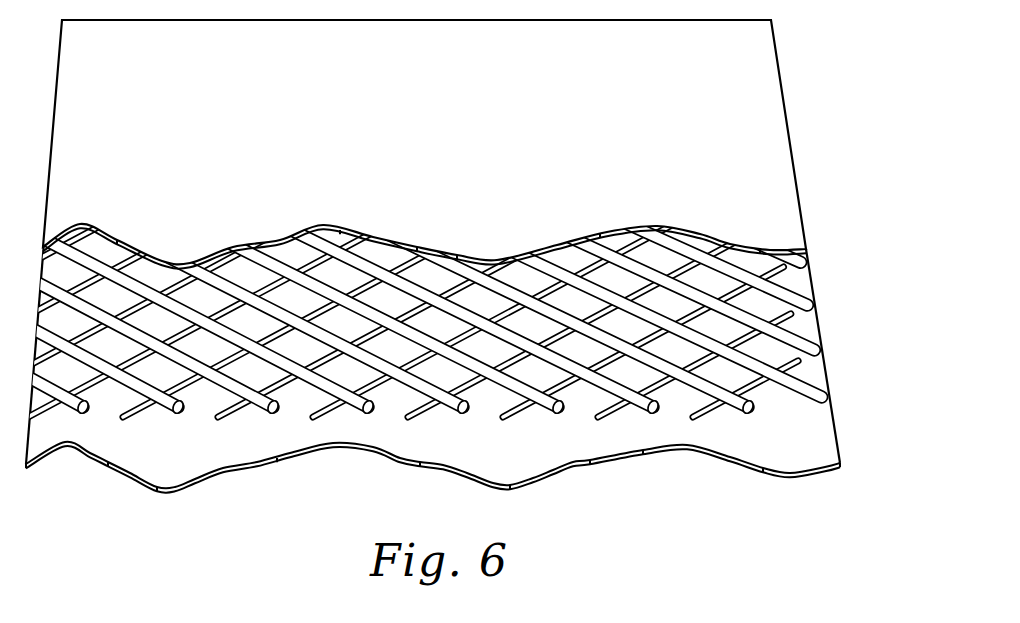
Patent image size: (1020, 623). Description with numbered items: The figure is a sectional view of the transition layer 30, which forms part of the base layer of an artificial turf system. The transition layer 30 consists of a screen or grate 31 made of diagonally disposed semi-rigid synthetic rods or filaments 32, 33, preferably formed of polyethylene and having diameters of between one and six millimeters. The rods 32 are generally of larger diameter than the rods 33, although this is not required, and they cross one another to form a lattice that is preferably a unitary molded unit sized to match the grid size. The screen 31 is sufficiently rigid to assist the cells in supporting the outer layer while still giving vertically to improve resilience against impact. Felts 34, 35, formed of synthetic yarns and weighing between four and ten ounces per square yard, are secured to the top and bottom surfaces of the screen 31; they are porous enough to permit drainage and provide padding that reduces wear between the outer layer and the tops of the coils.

The transition layer 30 is at (864, 262).
The screen or grate 31 is at (674, 397).
The rods or filaments 32 is at (812, 385).
The rods or filaments 33 is at (749, 394).
The felt 34 is at (768, 127).
The felt 35 is at (602, 445).